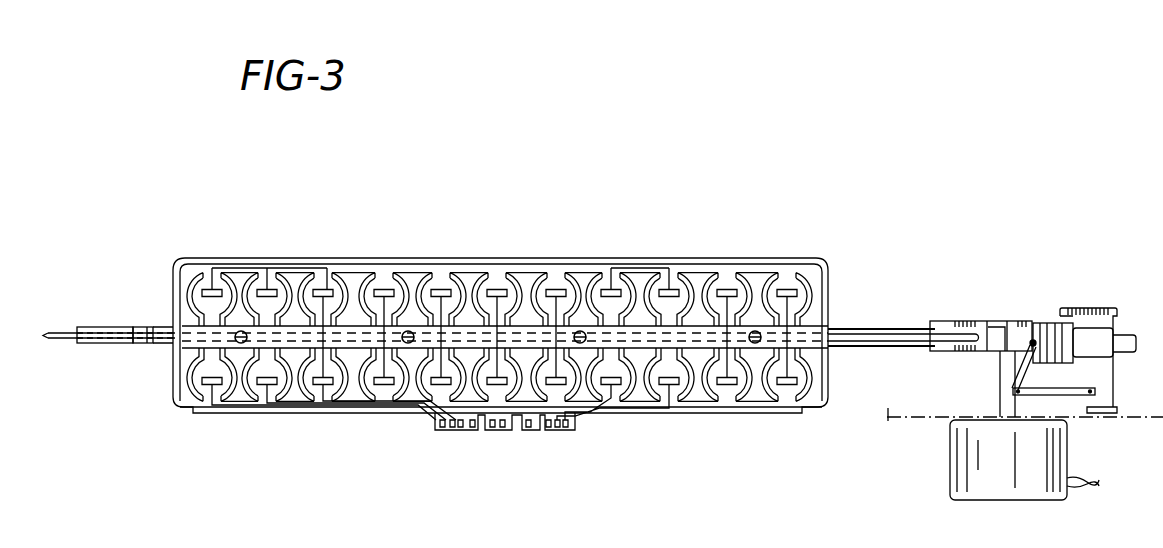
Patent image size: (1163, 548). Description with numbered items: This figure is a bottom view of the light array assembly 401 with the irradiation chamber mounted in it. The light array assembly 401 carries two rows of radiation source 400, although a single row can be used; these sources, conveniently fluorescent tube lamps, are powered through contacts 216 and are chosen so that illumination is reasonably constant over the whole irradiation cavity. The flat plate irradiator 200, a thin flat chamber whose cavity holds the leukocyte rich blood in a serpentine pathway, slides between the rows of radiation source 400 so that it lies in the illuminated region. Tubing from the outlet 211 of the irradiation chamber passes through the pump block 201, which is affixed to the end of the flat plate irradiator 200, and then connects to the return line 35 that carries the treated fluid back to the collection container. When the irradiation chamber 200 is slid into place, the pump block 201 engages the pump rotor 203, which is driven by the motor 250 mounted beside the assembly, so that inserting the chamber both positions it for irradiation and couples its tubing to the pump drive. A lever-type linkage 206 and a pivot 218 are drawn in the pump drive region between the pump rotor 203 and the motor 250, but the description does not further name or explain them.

The return line 35 is at (63, 339).
The flat plate irradiator 200 is at (148, 322).
The pump block 201 is at (888, 327).
The pump rotor 203 is at (995, 320).
The lever link 206 is at (1017, 358).
The outlet 211 is at (882, 340).
The contacts 216 is at (530, 427).
The pivot 218 is at (1034, 341).
The motor 250 is at (973, 468).
The radiation source 400 is at (698, 298).
The light array assembly 401 is at (830, 275).